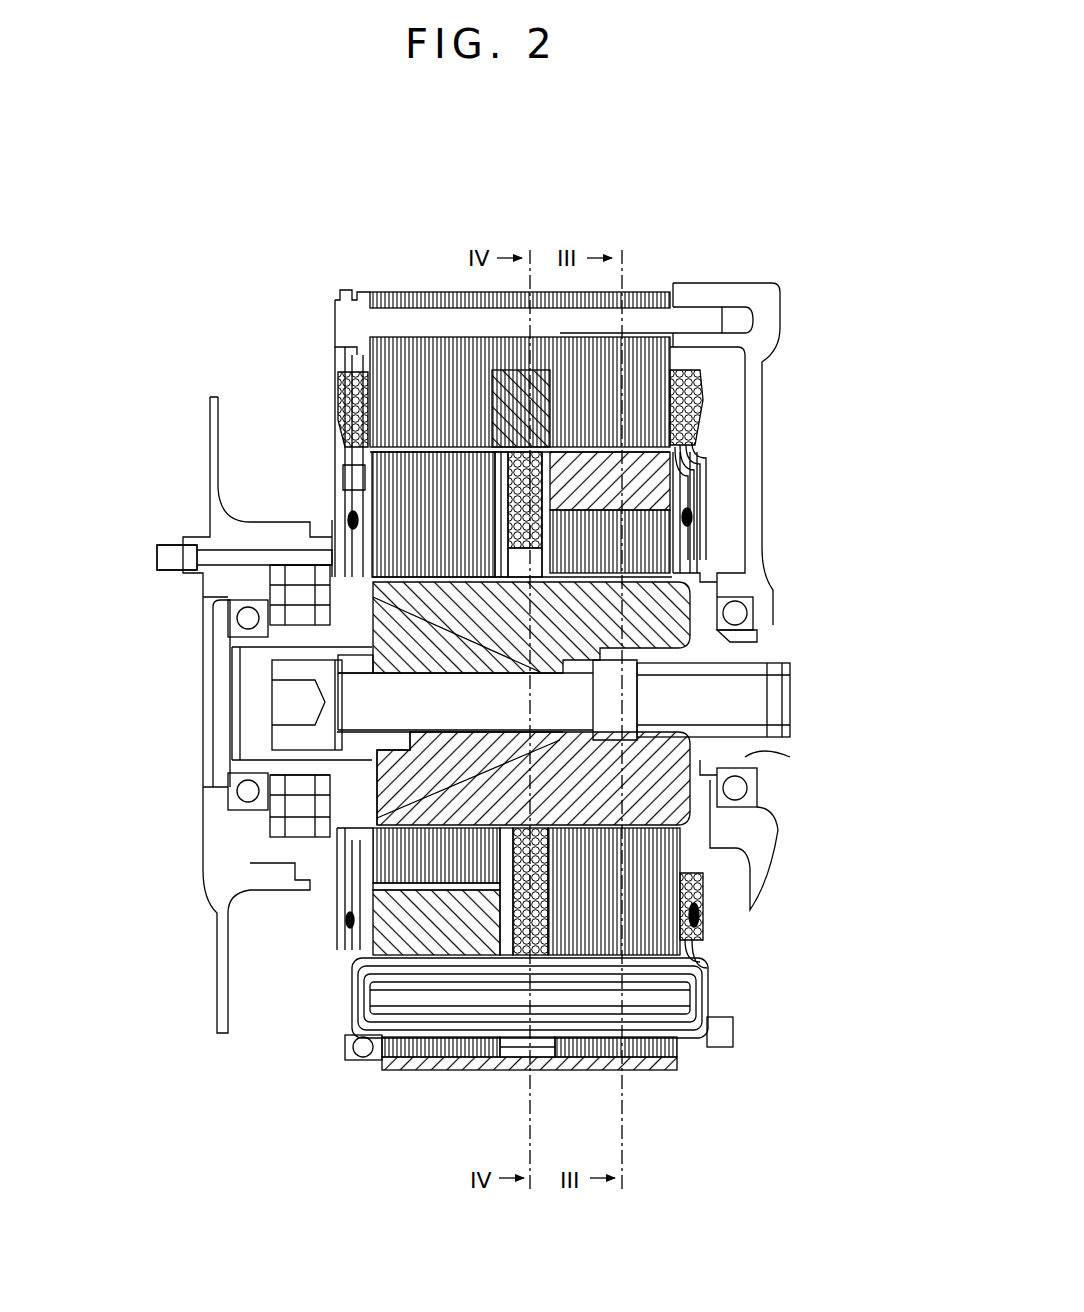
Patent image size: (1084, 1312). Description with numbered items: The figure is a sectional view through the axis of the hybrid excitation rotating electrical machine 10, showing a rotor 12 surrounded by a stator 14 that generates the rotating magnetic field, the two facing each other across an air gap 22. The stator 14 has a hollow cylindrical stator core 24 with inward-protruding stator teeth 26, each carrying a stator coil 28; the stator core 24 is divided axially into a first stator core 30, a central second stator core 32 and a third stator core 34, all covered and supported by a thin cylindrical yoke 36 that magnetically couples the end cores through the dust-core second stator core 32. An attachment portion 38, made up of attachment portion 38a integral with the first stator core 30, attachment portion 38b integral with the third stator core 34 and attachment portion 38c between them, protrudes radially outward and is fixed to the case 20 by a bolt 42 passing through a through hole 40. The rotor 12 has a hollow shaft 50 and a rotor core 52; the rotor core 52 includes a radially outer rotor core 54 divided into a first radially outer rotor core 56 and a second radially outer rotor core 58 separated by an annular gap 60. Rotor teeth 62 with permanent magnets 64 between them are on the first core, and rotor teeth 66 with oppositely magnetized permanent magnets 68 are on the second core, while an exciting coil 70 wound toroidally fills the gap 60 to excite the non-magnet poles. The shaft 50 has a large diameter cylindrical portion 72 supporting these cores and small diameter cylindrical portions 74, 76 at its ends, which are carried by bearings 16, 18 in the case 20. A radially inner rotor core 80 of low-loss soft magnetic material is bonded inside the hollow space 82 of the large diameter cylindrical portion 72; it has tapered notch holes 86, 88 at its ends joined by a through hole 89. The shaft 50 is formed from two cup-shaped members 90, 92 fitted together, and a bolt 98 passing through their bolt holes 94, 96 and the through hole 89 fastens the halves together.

The hybrid excitation rotating electrical machine 10 is at (745, 275).
The rotor 12 is at (802, 688).
The stator 14 is at (656, 276).
The bearing 16 is at (252, 795).
The bearing 18 is at (760, 595).
The case 20 is at (248, 845).
The air gap 22 is at (418, 455).
The stator core 24 is at (565, 1120).
The stator tooth 26 is at (637, 413).
The stator coil 28 is at (715, 985).
The first stator core 30 is at (443, 1070).
The second stator core 32 is at (520, 1058).
The third stator core 34 is at (560, 1068).
The yoke 36 is at (396, 1070).
The attachment portion 38 is at (659, 200).
The attachment portion 38a is at (456, 340).
The attachment portion 38b is at (627, 340).
The attachment portion 38c is at (538, 368).
The through hole 40 is at (392, 305).
The bolt 42 is at (345, 322).
The shaft 50 is at (107, 850).
The rotor core 52 is at (95, 478).
The radially outer rotor core 54 is at (140, 460).
The first radially outer rotor core 56 is at (400, 483).
The second radially outer rotor core 58 is at (580, 550).
The annular gap 60 is at (590, 575).
The rotor tooth 62 is at (405, 470).
The permanent magnet 64 is at (418, 927).
The rotor tooth 66 is at (657, 920).
The permanent magnet 68 is at (648, 478).
The exciting coil 70 is at (545, 905).
The large diameter cylindrical portion 72 is at (358, 822).
The small diameter cylindrical portion 74 is at (335, 750).
The small diameter cylindrical portion 76 is at (748, 762).
The radially inner rotor core 80 is at (332, 556).
The hollow space 82 is at (690, 655).
The notch hole 86 is at (435, 608).
The notch hole 88 is at (737, 613).
The through hole 89 is at (430, 633).
The cup-shaped member 90 is at (335, 866).
The cup-shaped member 92 is at (513, 880).
The bolt hole 94 is at (373, 731).
The bolt hole 96 is at (745, 752).
The bolt 98 is at (340, 722).